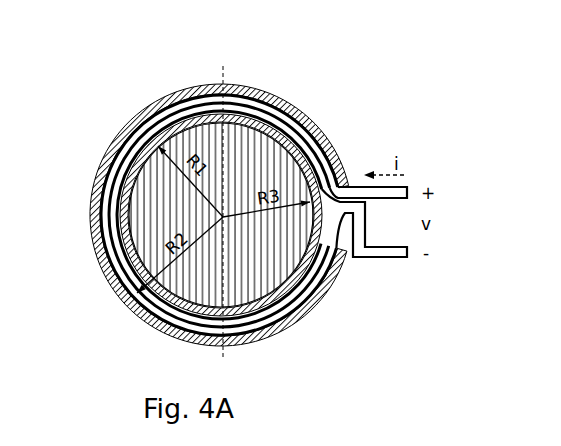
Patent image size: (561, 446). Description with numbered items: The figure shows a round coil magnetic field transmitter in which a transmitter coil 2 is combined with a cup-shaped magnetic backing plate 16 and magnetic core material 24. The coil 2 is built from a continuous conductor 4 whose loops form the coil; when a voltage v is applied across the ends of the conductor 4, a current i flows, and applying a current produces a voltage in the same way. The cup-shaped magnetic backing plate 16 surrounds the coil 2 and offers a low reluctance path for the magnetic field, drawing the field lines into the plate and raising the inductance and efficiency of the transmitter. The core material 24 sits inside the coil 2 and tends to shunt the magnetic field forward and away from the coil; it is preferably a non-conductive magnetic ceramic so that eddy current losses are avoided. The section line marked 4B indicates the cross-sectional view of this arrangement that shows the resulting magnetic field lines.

The transmitter coil 2 is at (142, 113).
The cup-shaped magnetic backing plate 16 is at (312, 118).
The magnetic core material 24 is at (152, 220).
The continuous conductor 4 is at (367, 258).
The section line 4B- 4B is at (222, 70).